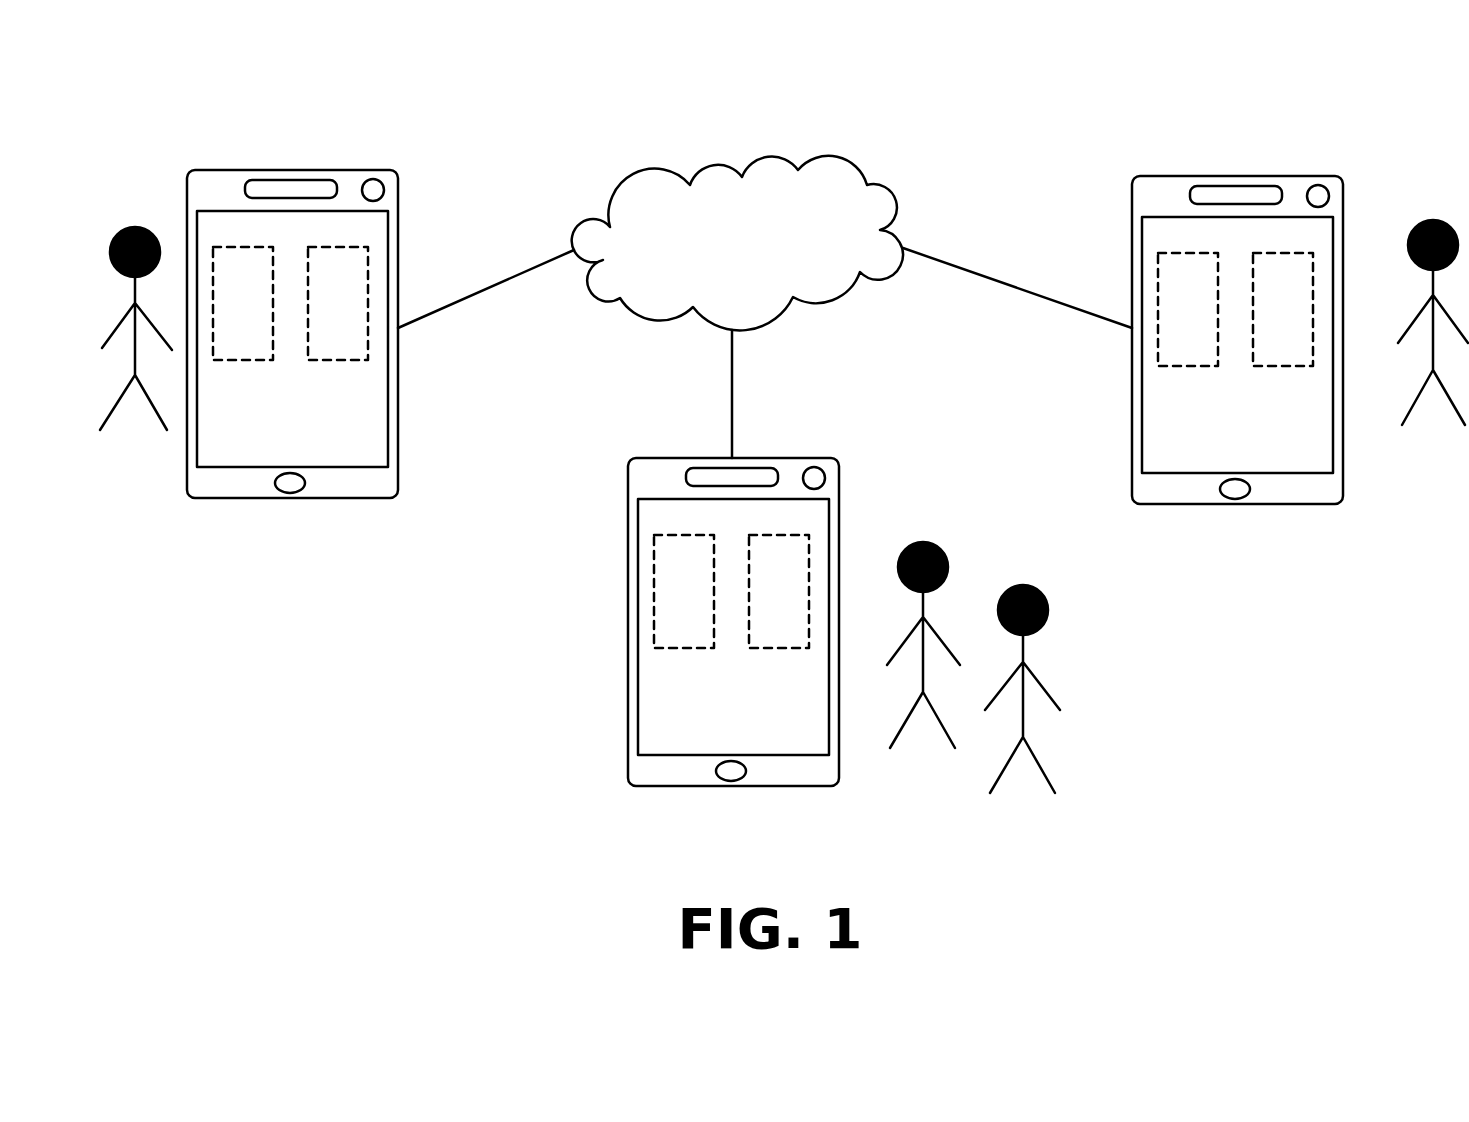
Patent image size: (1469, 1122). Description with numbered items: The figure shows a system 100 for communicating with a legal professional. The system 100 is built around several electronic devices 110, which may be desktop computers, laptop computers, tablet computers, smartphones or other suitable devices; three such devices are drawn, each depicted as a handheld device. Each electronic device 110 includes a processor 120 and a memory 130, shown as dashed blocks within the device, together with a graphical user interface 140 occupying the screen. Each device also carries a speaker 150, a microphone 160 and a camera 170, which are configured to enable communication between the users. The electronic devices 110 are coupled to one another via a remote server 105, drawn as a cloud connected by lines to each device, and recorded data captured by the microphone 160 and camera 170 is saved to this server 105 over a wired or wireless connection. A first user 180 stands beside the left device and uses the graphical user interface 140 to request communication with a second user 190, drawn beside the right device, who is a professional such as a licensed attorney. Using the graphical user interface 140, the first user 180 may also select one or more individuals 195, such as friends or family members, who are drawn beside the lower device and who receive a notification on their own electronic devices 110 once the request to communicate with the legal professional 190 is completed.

The system 100 is at (712, 107).
The remote server 105 is at (715, 254).
The electronic device 110 is at (208, 170).
The processor 120 is at (226, 301).
The memory 130 is at (321, 301).
The graphical user interface 140 is at (363, 452).
The speaker 150 is at (272, 190).
The microphone 160 is at (290, 495).
The camera 170 is at (375, 188).
The first user 180 is at (135, 228).
The second user 190 is at (1433, 220).
The individuals 195 is at (945, 548).